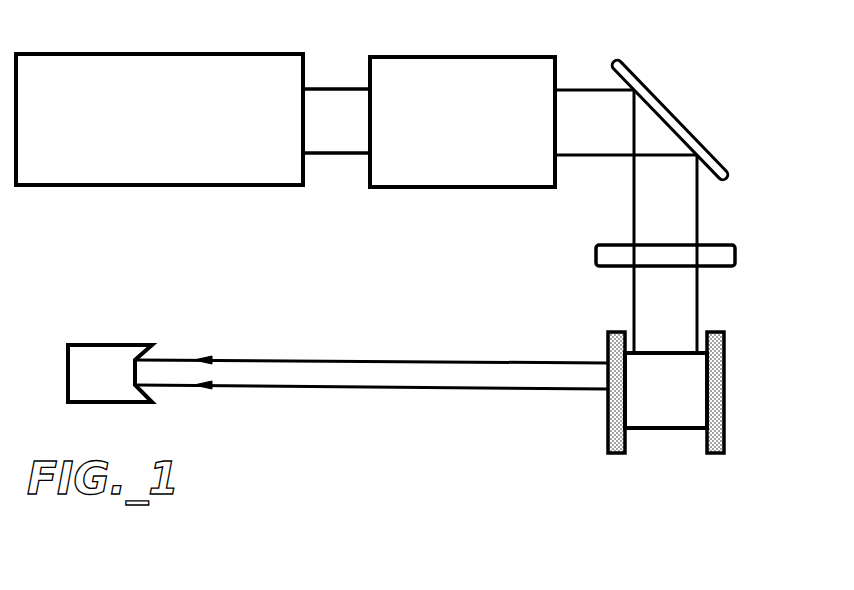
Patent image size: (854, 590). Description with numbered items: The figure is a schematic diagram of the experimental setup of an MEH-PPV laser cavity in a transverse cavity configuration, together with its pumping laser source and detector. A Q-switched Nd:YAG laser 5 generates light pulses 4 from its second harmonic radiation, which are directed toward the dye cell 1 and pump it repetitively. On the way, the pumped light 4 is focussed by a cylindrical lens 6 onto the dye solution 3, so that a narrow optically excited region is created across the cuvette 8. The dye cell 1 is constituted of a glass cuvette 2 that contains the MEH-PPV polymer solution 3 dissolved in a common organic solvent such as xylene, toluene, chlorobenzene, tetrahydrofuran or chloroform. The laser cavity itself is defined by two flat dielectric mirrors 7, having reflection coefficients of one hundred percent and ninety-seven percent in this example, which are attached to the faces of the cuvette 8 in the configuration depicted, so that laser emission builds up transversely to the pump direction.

The dye cell 1 is at (718, 405).
The glass cuvette 2 is at (640, 430).
The MEH-PPV polymer solution 3 is at (680, 410).
The light pulses 4 is at (672, 380).
The Q-switched Nd:YAG laser 5 is at (137, 52).
The cylindrical lens 6 is at (714, 250).
The flat dielectric mirrors 7 is at (722, 442).
The cuvette 8 is at (676, 354).